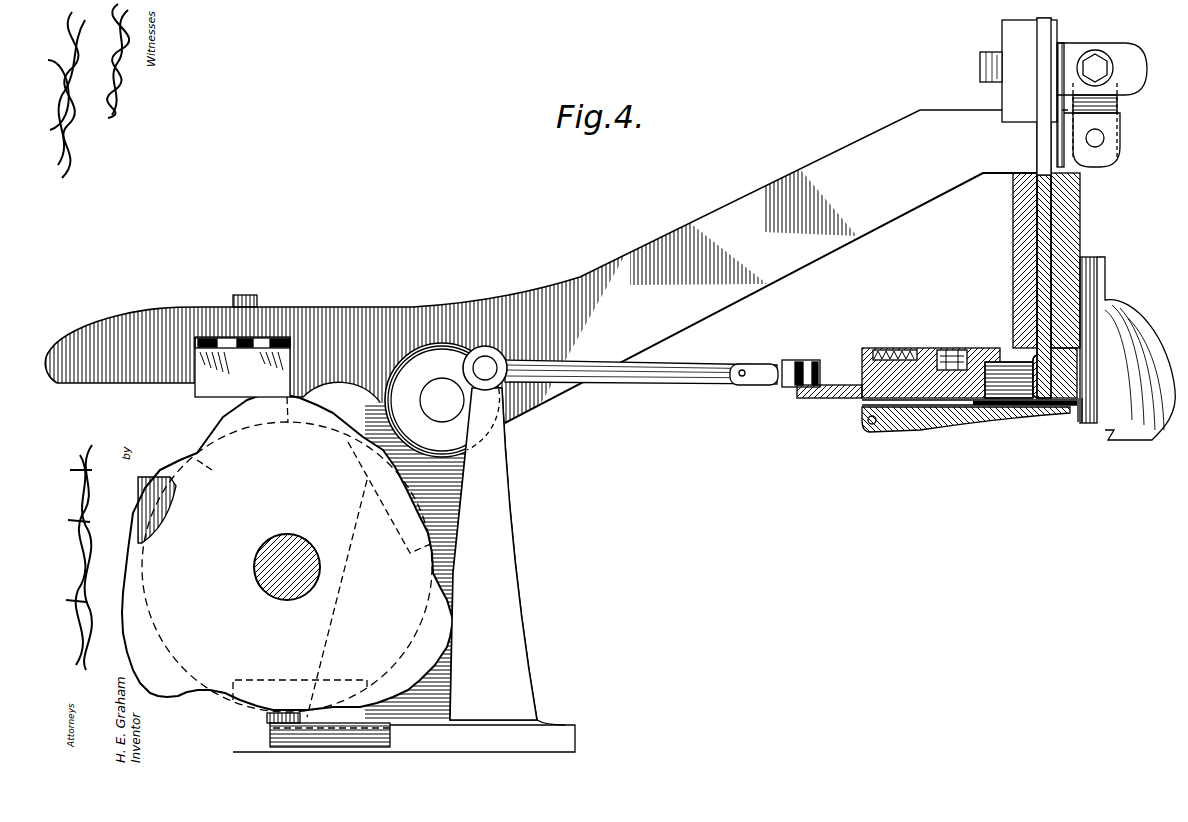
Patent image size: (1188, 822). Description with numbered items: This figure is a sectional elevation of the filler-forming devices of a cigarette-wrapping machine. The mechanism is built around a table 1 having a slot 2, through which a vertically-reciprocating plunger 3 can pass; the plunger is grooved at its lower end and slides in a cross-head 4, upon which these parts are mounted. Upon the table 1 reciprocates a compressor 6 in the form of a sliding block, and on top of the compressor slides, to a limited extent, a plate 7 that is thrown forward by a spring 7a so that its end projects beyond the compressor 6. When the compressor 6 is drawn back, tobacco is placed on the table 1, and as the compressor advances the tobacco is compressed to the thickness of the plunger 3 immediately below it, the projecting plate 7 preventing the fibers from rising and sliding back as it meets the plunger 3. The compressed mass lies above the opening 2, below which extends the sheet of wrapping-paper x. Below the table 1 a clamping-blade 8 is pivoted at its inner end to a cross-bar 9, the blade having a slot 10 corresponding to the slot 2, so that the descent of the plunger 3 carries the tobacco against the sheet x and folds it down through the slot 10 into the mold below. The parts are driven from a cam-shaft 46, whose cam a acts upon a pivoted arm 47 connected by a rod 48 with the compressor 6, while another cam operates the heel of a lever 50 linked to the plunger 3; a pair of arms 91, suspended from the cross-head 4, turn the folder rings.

The table 1 is at (860, 400).
The slot 2 is at (1027, 403).
The plunger 3 is at (1040, 278).
The cross-head 4 is at (1080, 238).
The compressor 6 is at (862, 365).
The plate 7 is at (982, 351).
The spring 7a is at (880, 350).
The clamping-blade 8 is at (990, 413).
The cross-bar 9 is at (867, 430).
The slot 10 is at (1050, 410).
The sheet of wrapping-paper x is at (1082, 408).
The cam-shaft 46 is at (278, 542).
The pivoted arm 47 is at (493, 498).
The rod 48 is at (697, 381).
The lever 50 is at (683, 233).
The arms 91 is at (1127, 348).
The cam a is at (122, 518).